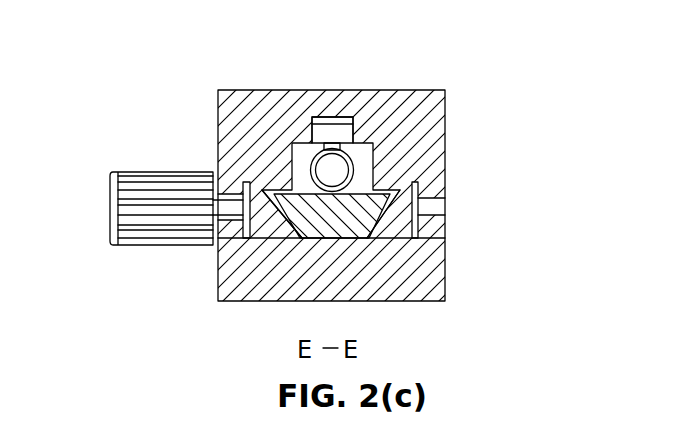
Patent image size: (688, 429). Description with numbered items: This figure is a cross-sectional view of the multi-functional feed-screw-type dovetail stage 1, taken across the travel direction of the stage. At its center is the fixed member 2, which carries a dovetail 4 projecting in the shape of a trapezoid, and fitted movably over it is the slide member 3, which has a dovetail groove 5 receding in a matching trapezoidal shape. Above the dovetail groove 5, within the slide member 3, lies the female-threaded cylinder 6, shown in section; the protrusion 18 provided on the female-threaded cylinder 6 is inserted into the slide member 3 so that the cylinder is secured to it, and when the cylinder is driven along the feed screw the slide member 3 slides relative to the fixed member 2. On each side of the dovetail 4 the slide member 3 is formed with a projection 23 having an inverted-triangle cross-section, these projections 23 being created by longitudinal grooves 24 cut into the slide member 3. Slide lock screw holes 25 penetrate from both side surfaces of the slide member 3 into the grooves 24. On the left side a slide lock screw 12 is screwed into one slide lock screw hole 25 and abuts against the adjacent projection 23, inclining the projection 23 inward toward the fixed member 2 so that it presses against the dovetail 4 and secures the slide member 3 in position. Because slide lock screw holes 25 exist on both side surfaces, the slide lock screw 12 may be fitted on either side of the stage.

The multi-functional feed-screw-type dovetail stage 1 is at (485, 72).
The fixed member 2 is at (370, 288).
The slide member 3 is at (388, 100).
The dovetail 4 is at (328, 222).
The dovetail groove 5 is at (357, 187).
The female-threaded cylinder 6 is at (308, 170).
The slide lock screw 12 is at (118, 178).
The protrusion 18 is at (323, 128).
The projection 23 is at (270, 228).
The longitudinal groove 24 is at (240, 223).
The slide lock screw hole 25 is at (209, 198).